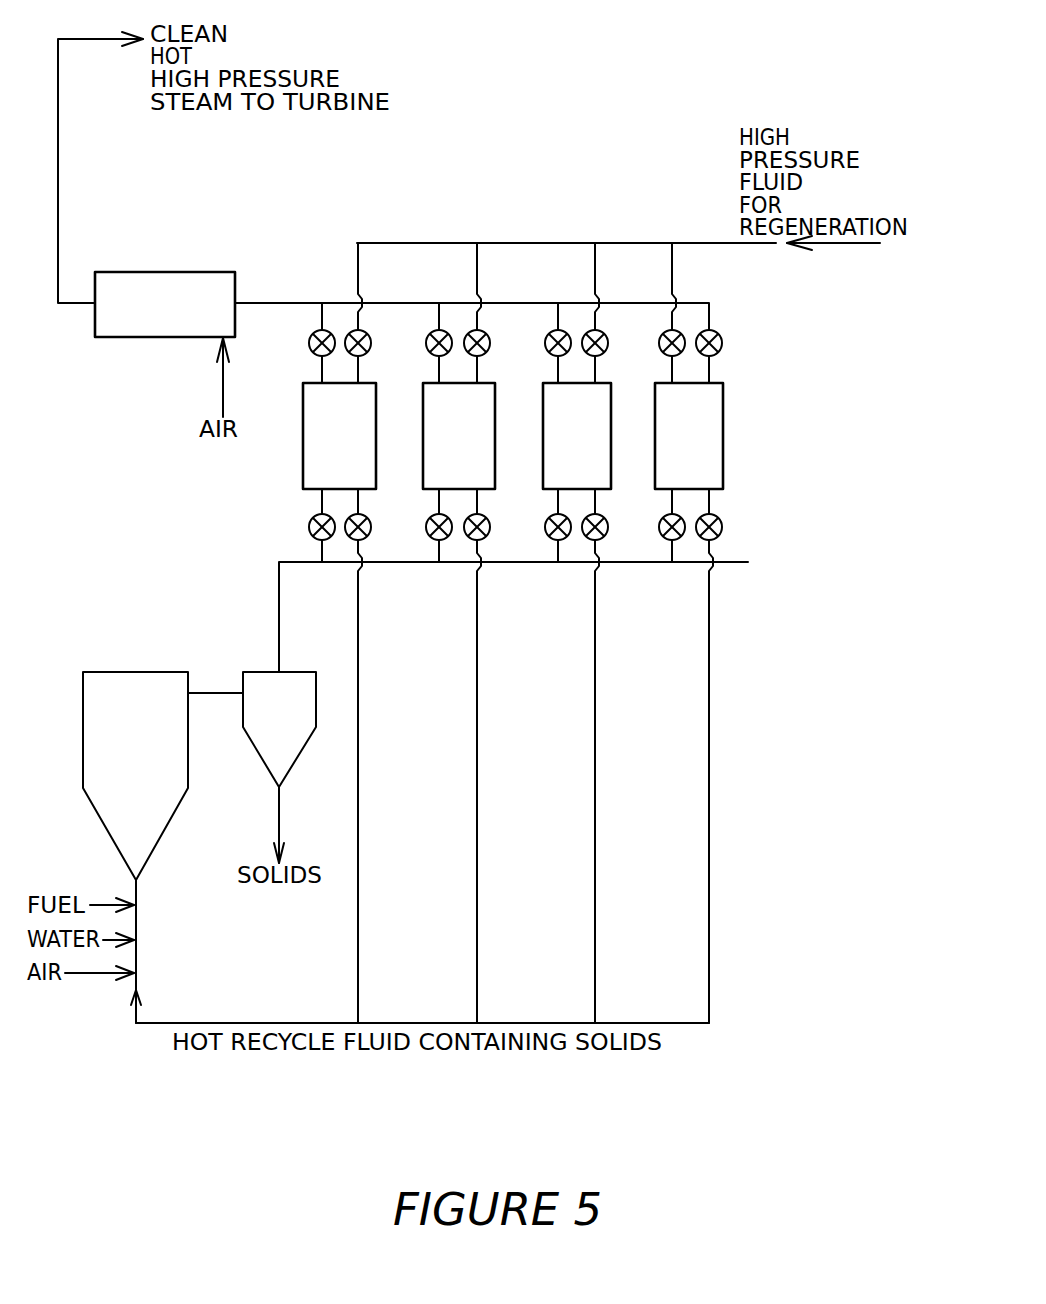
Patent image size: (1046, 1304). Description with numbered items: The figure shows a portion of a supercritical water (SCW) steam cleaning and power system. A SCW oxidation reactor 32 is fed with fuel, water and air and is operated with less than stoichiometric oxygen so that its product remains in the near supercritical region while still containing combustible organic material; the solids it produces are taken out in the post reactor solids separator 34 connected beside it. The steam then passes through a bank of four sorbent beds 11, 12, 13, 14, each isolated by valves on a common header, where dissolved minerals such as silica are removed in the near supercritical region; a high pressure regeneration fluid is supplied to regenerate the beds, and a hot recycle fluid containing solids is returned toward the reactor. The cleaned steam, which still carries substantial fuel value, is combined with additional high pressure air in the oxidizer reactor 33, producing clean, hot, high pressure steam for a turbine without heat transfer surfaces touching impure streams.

The sorbent bed 11 is at (351, 449).
The sorbent bed 12 is at (468, 449).
The sorbent bed 13 is at (589, 449).
The sorbent bed 14 is at (701, 449).
The SCW oxidation reactor 32 is at (145, 732).
The reactor 33 is at (196, 330).
The post reactor solids separator 34 is at (289, 732).